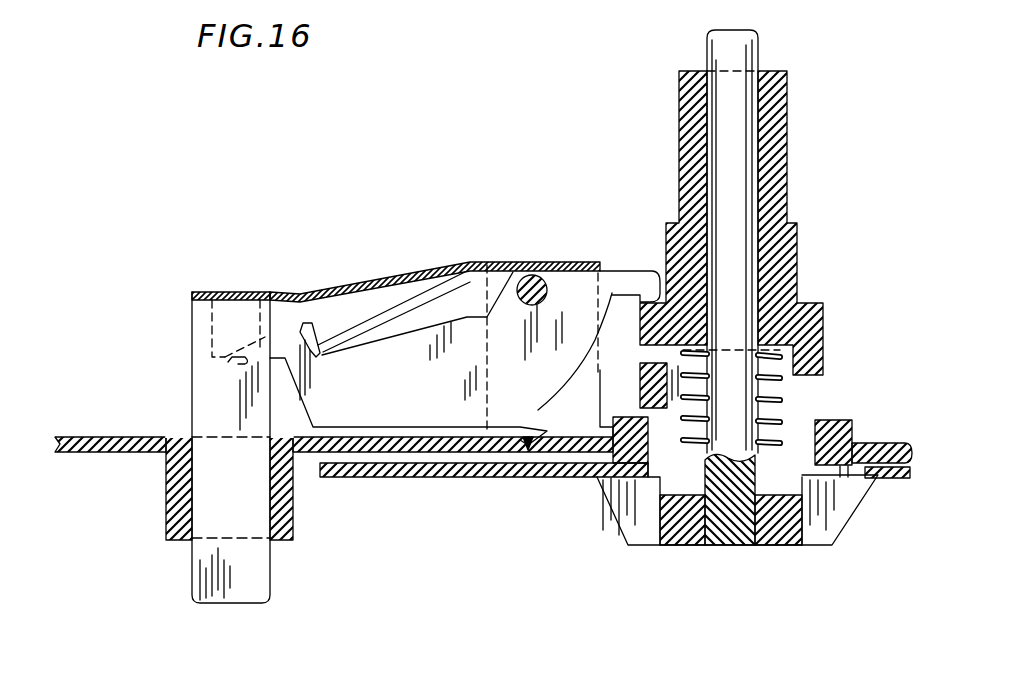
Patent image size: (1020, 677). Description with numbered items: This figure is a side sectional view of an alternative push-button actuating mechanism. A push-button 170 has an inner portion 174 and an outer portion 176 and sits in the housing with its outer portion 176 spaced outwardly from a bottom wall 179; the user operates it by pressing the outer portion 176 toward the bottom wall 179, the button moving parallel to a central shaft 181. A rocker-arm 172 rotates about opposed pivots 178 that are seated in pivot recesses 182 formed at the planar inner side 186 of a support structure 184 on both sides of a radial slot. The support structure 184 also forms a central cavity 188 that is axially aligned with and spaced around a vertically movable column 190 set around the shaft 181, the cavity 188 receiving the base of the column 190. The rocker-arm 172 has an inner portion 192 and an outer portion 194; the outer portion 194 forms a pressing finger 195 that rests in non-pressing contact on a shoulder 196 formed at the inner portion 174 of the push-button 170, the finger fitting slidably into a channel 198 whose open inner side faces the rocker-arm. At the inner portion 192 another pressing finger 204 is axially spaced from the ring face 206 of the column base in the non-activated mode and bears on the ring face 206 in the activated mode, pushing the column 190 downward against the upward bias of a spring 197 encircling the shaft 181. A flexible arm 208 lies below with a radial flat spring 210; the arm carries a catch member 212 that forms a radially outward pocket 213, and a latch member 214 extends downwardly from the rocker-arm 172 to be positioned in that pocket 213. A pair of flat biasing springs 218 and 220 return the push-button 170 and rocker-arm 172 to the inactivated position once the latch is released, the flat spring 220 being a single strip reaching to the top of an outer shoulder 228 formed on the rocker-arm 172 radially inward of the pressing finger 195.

The push-button 170 is at (192, 403).
The rocker-arm 172 is at (430, 413).
The inner portion 174 is at (192, 325).
The outer portion 176 is at (193, 580).
The pivot 178 is at (528, 262).
The bottom wall 179 is at (98, 435).
The central shaft 181 is at (742, 53).
The pivot recess 182 is at (541, 263).
The support structure 184 is at (580, 375).
The planar inner side 186 is at (600, 270).
The central cavity 188 is at (625, 466).
The column 190 is at (778, 137).
The inner portion 192 is at (625, 338).
The outer portion 194 is at (317, 392).
The pressing finger 195 is at (240, 358).
The shoulder 196 is at (259, 340).
The spring 197 is at (790, 375).
The channel 198 is at (234, 316).
The pressing finger 204 is at (645, 273).
The ring face 206 is at (812, 303).
The flexible arm 208 is at (365, 447).
The radial flat spring 210 is at (418, 477).
The catch member 212 is at (528, 477).
The pocket 213 is at (483, 463).
The latch member 214 is at (537, 420).
The flat biasing spring 218 is at (377, 282).
The flat biasing spring 220 is at (376, 323).
The outer shoulder 228 is at (304, 325).